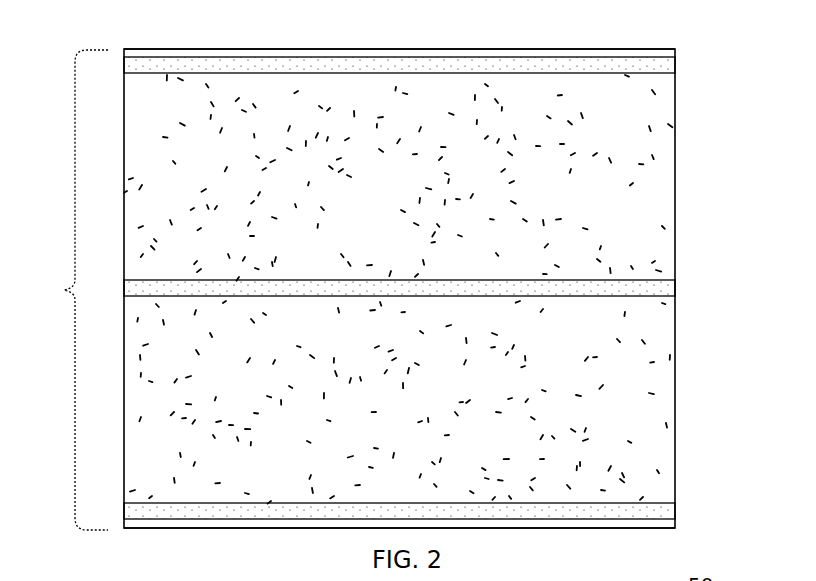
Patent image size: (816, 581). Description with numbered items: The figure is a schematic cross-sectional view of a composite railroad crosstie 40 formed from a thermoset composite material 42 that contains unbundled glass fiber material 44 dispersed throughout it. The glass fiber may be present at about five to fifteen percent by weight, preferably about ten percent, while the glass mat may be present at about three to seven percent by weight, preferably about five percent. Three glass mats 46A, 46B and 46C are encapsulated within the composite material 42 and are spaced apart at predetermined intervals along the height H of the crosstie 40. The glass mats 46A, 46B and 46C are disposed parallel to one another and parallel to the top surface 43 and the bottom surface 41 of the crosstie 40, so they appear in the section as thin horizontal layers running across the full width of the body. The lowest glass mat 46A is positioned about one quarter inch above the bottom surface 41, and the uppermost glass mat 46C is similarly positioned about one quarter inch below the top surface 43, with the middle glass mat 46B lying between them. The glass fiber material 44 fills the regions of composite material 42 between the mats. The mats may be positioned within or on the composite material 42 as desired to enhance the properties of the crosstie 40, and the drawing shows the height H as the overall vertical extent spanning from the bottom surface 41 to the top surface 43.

The railroad crosstie 40 is at (588, 26).
The bottom surface 41 is at (198, 528).
The thermoset composite material 42 is at (616, 110).
The top surface 43 is at (189, 49).
The unbundled glass fiber material 44 is at (173, 165).
The glass mat 46A is at (664, 506).
The glass mat 46B is at (668, 282).
The glass mat 46C is at (672, 58).
The height H is at (71, 290).